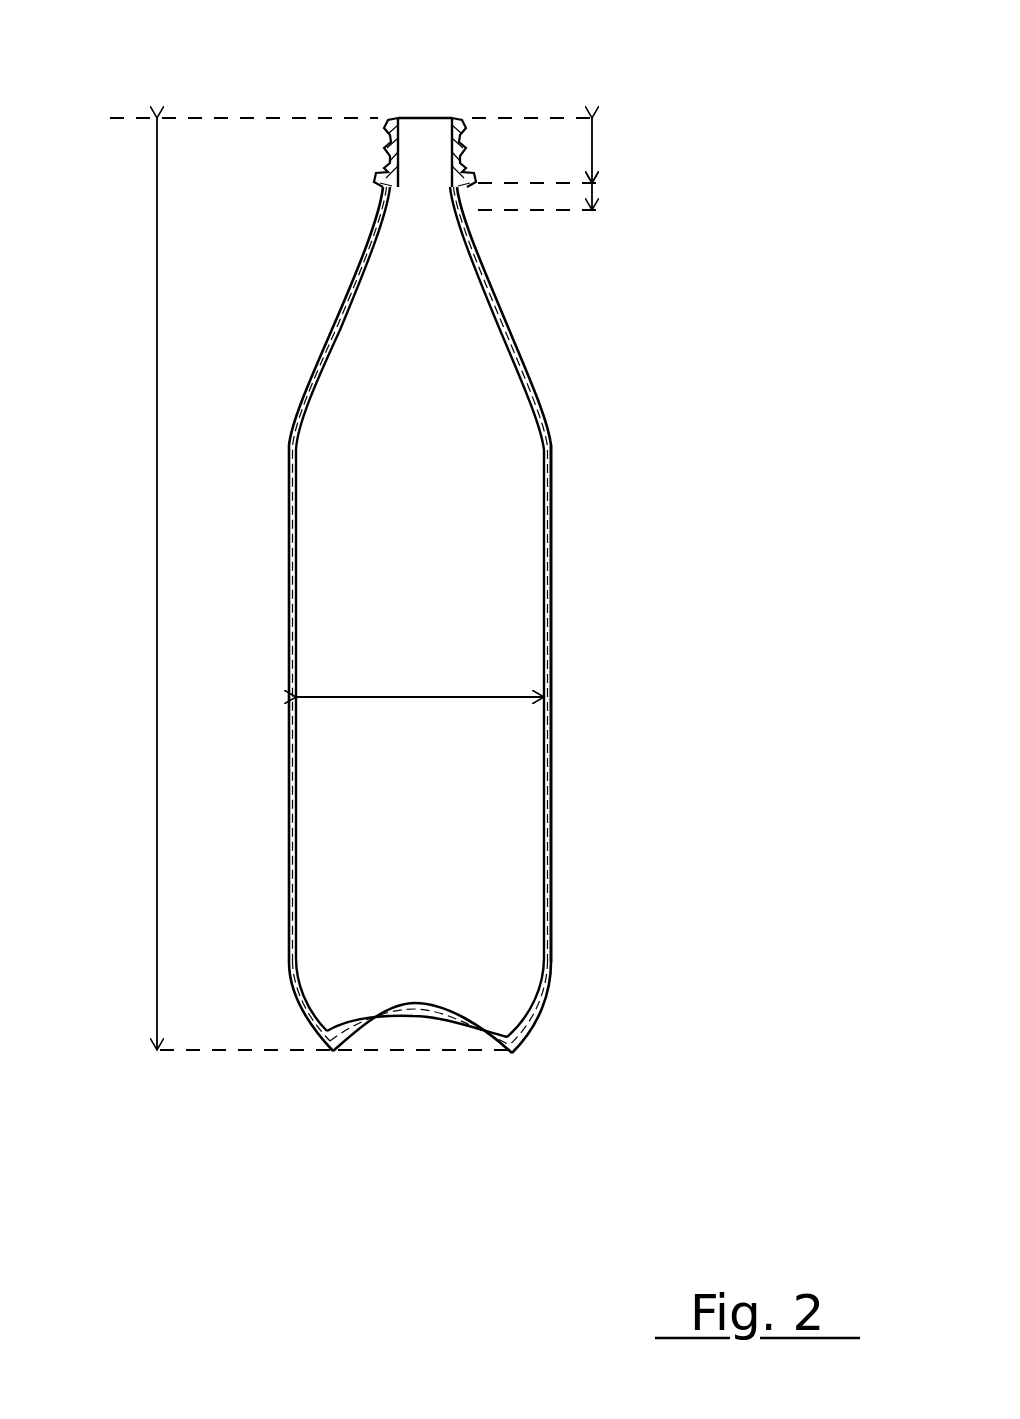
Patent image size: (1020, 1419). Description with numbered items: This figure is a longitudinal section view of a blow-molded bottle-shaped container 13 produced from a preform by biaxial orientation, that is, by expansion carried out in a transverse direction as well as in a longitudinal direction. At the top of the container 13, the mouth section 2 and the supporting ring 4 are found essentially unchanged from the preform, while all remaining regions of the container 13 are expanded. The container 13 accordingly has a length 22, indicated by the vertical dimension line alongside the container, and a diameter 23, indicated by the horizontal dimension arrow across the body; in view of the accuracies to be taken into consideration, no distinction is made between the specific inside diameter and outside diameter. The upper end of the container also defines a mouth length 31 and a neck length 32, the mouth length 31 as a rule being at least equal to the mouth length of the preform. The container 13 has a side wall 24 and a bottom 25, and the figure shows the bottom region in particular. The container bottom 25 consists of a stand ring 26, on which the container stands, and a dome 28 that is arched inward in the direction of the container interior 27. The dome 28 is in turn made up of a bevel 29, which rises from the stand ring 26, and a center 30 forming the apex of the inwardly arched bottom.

The mouth section 2 is at (432, 131).
The supporting ring 4 is at (373, 172).
The bottle-shaped container 13 is at (553, 577).
The length 22 is at (153, 596).
The diameter 23 is at (480, 703).
The side wall 24 is at (553, 525).
The bottom 25 is at (400, 1022).
The stand ring 26 is at (512, 1058).
The container interior 27 is at (475, 841).
The dome 28 is at (421, 1017).
The bevel 29 is at (478, 1013).
The center 30 is at (425, 1003).
The mouth length 31 is at (595, 148).
The neck length 32 is at (597, 195).